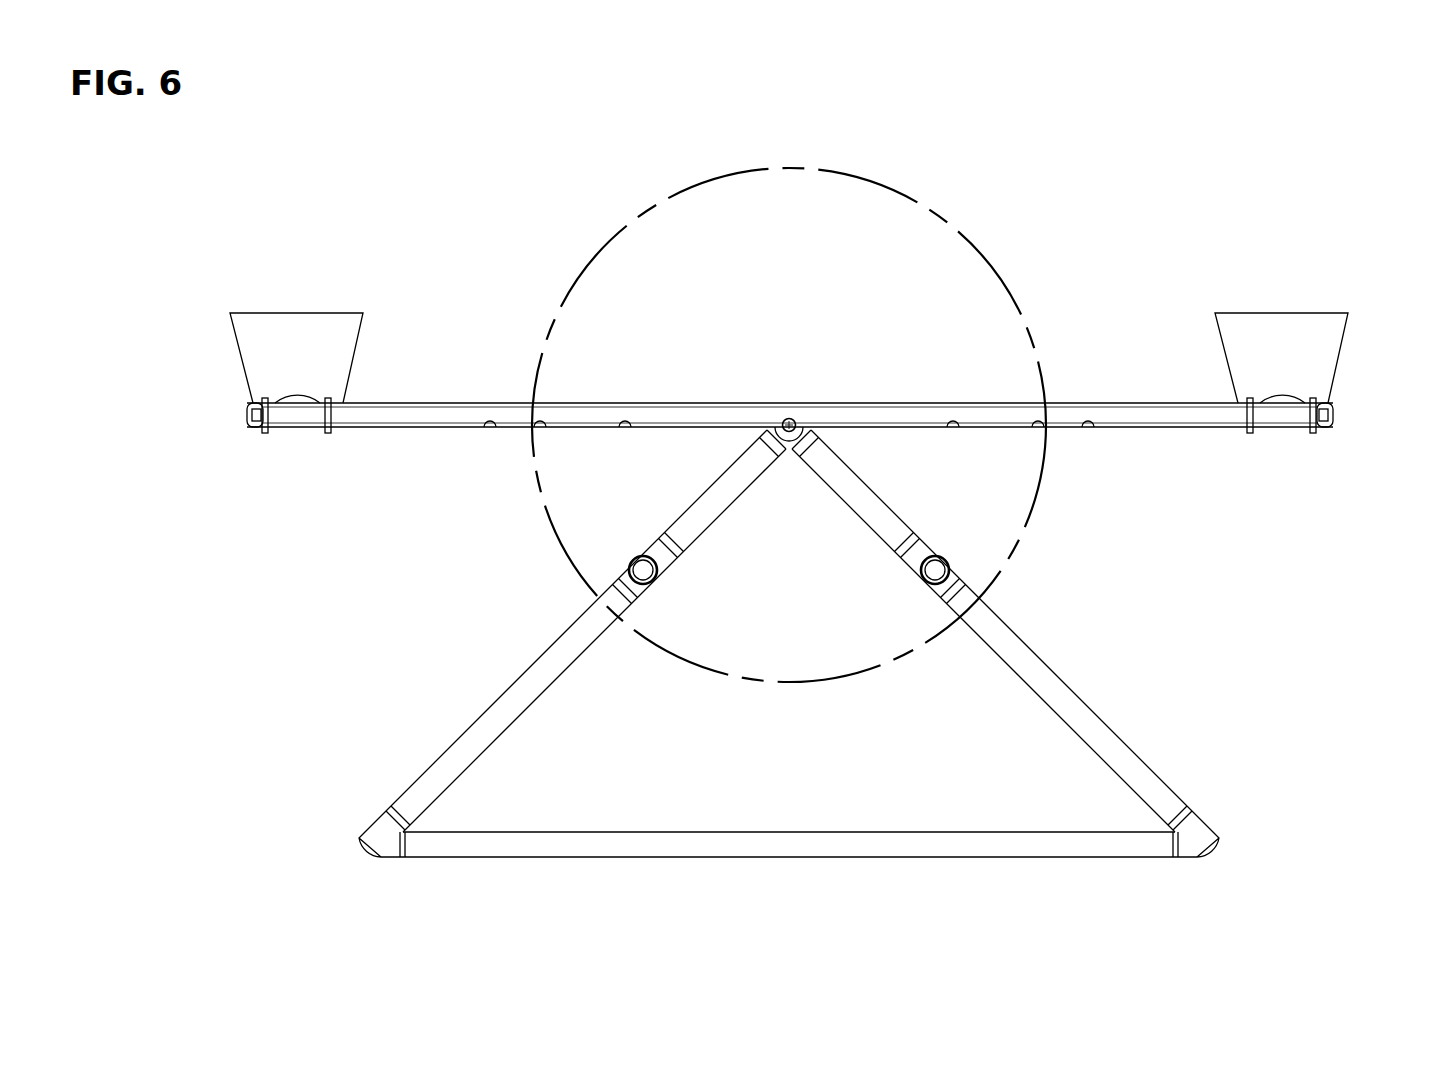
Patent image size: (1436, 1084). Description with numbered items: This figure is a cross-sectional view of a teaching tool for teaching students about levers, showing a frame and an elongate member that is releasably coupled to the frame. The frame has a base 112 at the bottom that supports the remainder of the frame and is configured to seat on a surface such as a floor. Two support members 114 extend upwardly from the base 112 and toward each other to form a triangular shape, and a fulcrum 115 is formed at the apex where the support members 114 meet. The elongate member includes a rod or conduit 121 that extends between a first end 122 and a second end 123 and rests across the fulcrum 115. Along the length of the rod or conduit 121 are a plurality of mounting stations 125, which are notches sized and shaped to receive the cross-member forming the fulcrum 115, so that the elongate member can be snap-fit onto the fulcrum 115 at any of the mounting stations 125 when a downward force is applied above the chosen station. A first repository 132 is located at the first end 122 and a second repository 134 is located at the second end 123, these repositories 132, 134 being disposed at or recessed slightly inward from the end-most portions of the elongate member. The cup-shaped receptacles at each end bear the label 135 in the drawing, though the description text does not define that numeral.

The base 112 is at (871, 858).
The support members 114 is at (474, 723).
The fulcrum 115 is at (790, 433).
The rod or conduit 121 is at (700, 401).
The first end 122 is at (252, 414).
The second end 123 is at (1330, 410).
The mounting stations 125 is at (490, 430).
The first repository 132 is at (240, 353).
The second repository 134 is at (1340, 357).
The cup 135 is at (273, 372).